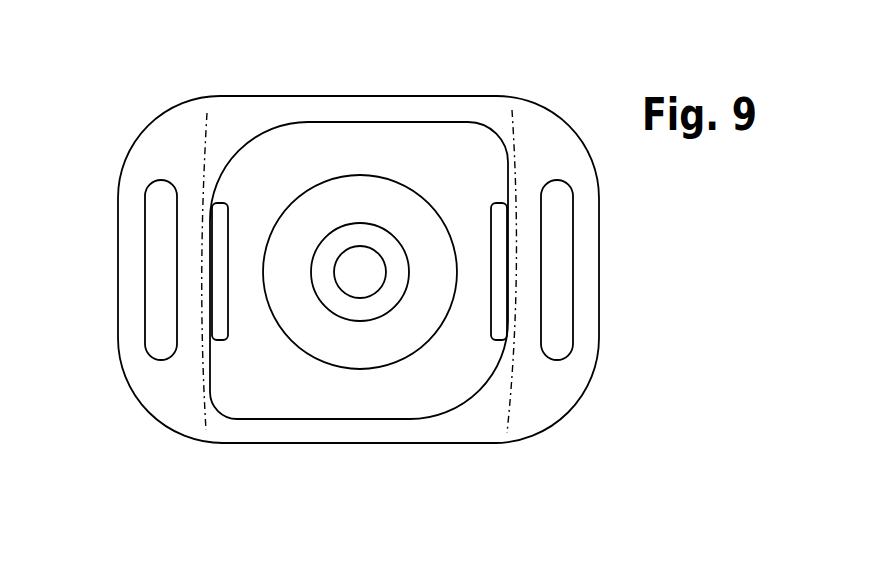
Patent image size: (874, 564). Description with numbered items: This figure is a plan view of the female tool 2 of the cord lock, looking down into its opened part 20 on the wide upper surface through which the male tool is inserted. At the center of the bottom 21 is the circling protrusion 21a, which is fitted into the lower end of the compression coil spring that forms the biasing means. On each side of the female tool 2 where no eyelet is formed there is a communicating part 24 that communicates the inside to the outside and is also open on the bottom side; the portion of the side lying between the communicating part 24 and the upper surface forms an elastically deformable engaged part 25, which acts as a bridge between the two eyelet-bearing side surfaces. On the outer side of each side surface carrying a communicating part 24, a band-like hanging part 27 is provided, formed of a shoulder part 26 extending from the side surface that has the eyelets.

The female tool 2 is at (521, 441).
The opened part 20 is at (387, 142).
The bottom 21 is at (367, 387).
The circling protrusion 21a is at (345, 228).
The communicating part 24 is at (213, 225).
The engaged part 25 is at (182, 303).
The shoulder part 26 is at (168, 118).
The hanging part 27 is at (128, 268).